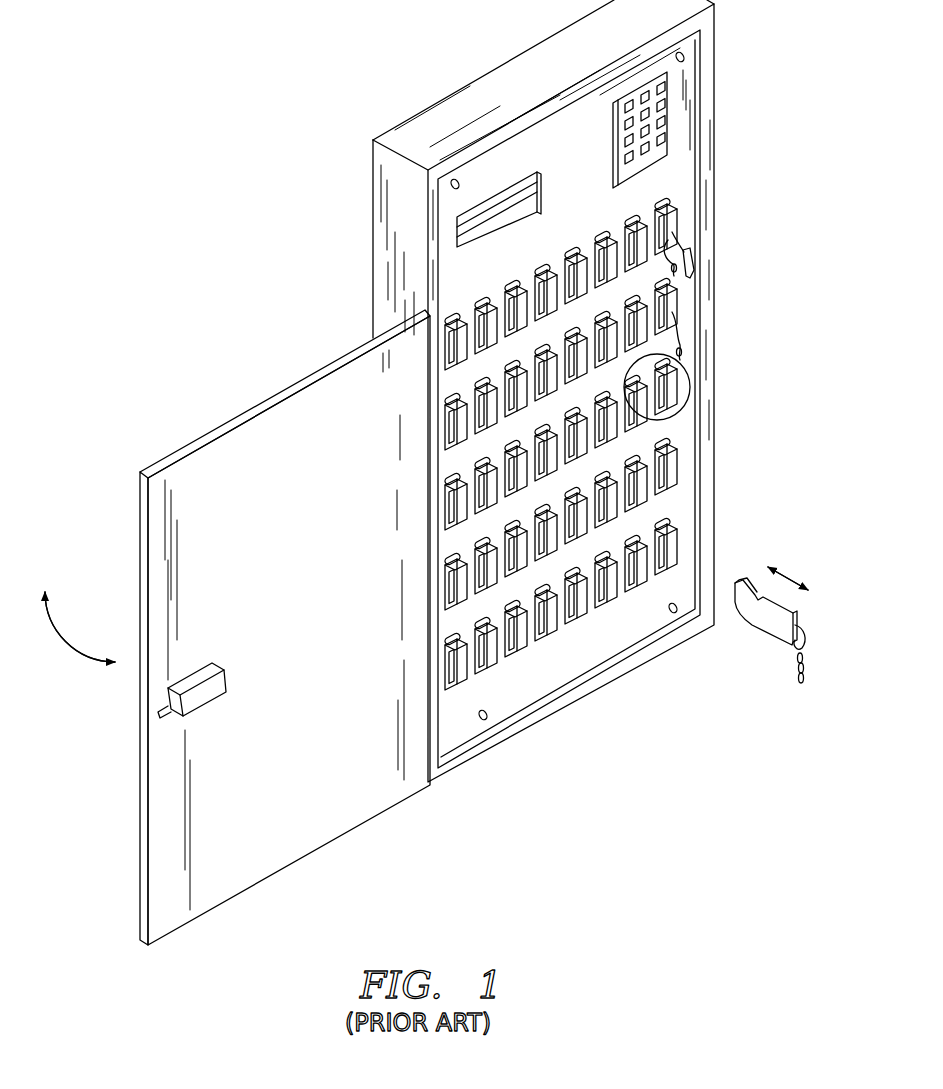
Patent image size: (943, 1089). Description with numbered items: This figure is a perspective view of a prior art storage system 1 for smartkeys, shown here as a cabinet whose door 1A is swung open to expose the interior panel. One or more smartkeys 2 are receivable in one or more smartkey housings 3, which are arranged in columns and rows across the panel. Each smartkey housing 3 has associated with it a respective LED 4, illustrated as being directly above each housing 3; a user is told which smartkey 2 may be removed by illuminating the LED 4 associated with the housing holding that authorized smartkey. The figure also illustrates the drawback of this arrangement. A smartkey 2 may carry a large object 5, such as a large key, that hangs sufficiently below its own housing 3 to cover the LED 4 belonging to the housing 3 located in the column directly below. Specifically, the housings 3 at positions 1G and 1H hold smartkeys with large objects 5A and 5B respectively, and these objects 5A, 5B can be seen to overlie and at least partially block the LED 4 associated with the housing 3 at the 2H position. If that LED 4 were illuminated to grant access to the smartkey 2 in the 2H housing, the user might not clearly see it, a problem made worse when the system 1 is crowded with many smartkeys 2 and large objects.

The system 1 is at (322, 292).
The door 1A is at (445, 362).
The position 1,G 1G is at (628, 220).
The position 1,H 1H is at (665, 203).
The position 2,H 2H is at (673, 288).
The large object 5A is at (690, 254).
The large object 5B is at (676, 268).
The smartkey housing 3 is at (683, 418).
The LED 4 is at (688, 355).
The smartkey 2 is at (752, 642).
The large object 5 is at (798, 672).